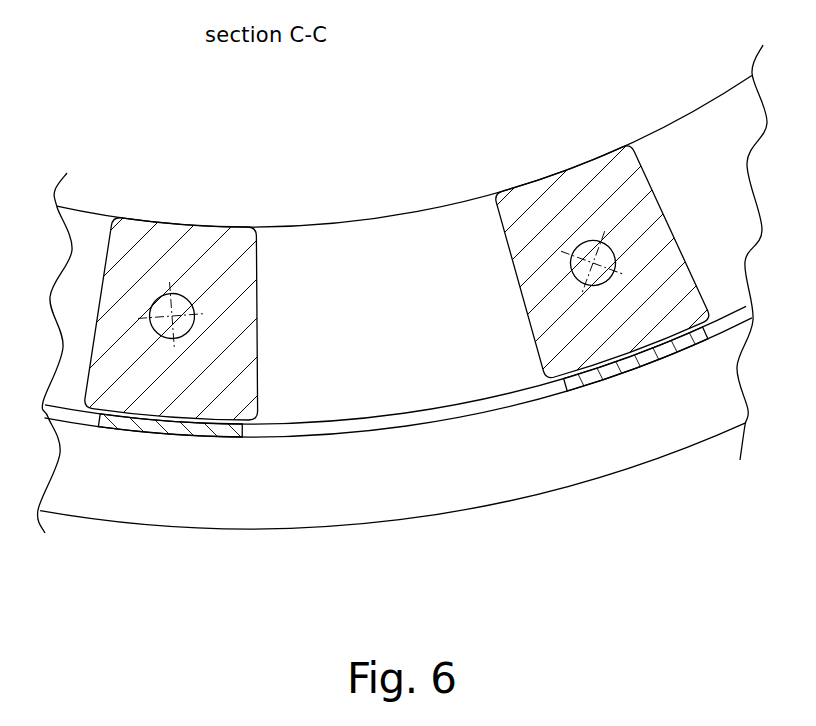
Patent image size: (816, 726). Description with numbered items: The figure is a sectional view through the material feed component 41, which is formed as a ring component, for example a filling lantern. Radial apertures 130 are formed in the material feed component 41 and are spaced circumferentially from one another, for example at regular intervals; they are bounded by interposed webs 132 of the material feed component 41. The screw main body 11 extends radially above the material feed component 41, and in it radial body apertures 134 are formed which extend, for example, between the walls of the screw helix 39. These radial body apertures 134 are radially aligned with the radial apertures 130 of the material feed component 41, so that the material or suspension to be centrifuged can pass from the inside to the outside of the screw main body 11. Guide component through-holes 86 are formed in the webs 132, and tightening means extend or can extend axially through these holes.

The screw main body 11 is at (173, 433).
The screw helix 39 is at (643, 437).
The material feed component 41 is at (710, 120).
The guide component through-holes 86 is at (160, 294).
The radial apertures 130 is at (377, 238).
The webs 132 is at (213, 240).
The radial body apertures 134 is at (430, 418).